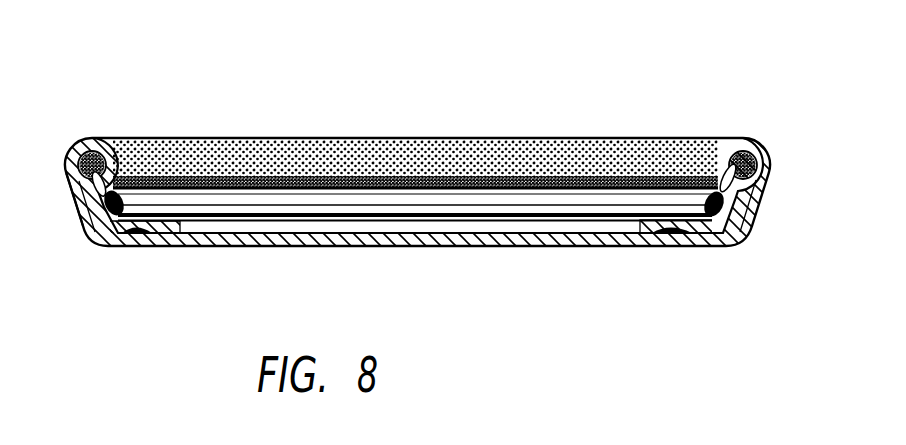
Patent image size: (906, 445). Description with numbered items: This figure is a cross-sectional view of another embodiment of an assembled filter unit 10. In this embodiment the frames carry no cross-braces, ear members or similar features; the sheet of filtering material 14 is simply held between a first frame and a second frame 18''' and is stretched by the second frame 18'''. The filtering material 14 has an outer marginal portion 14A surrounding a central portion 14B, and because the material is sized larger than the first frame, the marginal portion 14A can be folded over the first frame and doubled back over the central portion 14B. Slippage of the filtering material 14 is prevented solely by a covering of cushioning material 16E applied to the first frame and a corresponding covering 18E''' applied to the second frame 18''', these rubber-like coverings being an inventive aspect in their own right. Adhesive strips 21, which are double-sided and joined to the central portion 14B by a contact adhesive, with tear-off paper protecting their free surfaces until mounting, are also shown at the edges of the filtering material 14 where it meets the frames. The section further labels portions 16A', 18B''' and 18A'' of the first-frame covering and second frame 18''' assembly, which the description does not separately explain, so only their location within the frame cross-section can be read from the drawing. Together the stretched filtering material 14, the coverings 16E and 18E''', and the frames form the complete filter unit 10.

The filter unit 10 is at (419, 139).
The filtering material 14 is at (577, 246).
The outer marginal portion 14A is at (117, 247).
The central portion 14B is at (435, 238).
The covering of cushioning material 16E is at (99, 140).
The cover side portion 16A' is at (52, 204).
The second frame 18''' is at (415, 137).
The foam layer 18B''' is at (415, 128).
The covering 18E''' is at (377, 182).
The layer flange portion 18A'' is at (418, 149).
The adhesive strips 21 is at (158, 245).